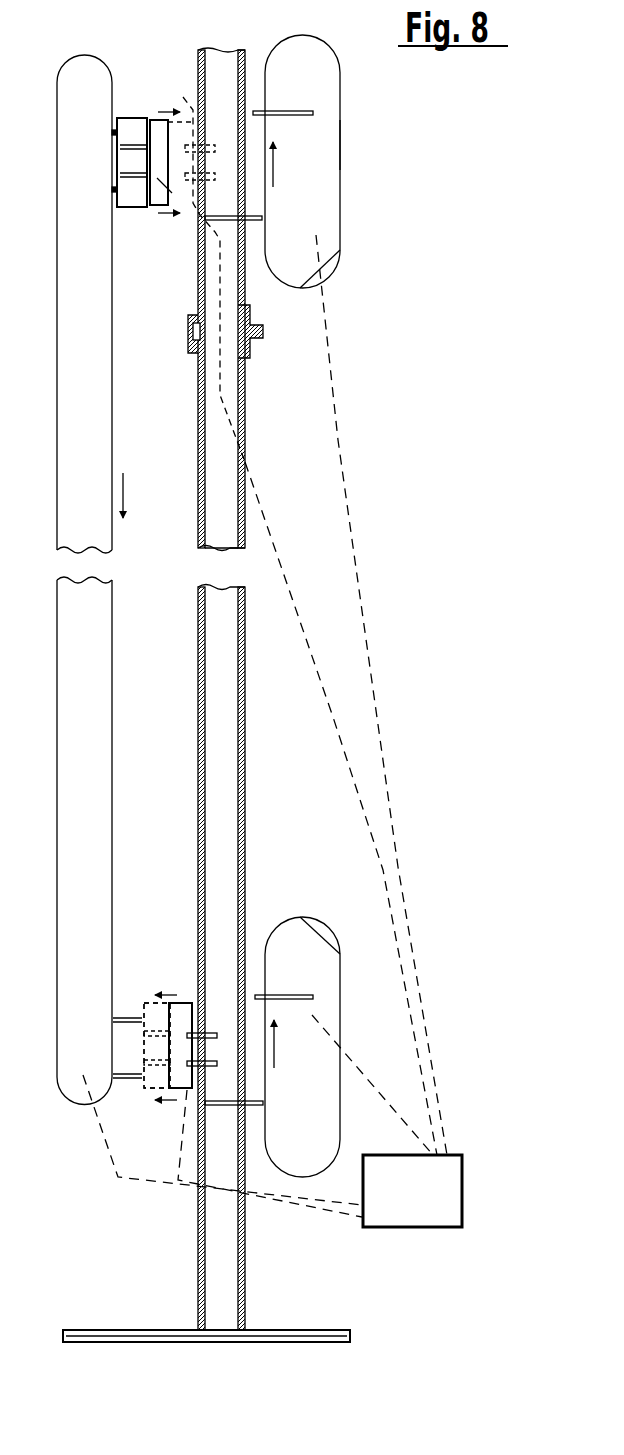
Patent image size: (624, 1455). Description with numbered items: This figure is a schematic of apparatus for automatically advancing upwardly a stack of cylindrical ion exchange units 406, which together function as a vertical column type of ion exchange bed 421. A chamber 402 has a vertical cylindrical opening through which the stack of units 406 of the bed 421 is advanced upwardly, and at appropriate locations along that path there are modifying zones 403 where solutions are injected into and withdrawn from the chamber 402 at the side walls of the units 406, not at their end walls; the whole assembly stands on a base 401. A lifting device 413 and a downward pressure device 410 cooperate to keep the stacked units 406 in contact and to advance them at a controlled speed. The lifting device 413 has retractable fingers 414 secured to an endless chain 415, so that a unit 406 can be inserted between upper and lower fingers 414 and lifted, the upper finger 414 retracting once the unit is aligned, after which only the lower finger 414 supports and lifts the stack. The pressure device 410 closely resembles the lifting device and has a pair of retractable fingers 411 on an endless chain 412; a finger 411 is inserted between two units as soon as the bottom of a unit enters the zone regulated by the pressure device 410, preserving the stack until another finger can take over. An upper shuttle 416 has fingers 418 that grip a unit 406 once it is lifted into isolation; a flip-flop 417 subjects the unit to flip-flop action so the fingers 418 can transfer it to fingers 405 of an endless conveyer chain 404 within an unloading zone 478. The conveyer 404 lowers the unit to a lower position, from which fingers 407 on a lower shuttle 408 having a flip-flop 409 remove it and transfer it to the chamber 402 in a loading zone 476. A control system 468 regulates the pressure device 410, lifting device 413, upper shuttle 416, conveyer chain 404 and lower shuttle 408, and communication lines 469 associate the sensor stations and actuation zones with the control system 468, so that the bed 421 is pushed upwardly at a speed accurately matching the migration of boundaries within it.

The base 401 is at (322, 1330).
The chamber 402 is at (245, 376).
The modifying zones 403 is at (263, 329).
The endless conveyer chain 404 is at (112, 80).
The fingers of endless conveyer chain 405 is at (115, 205).
The cylindrical ion exchange units 406 is at (125, 117).
The fingers on lower shuttle 407 is at (148, 1003).
The lower shuttle 408 is at (160, 986).
The flip-flop 409 is at (190, 1003).
The downward pressure device 410 is at (403, 272).
The retractable fingers 411 is at (254, 111).
The endless chain 412 is at (333, 62).
The lifting device 413 is at (300, 906).
The retractable fingers 414 is at (257, 995).
The endless chain 415 is at (334, 951).
The upper shuttle 416 is at (181, 240).
The flip-flop 417 is at (153, 212).
The fingers 418 is at (133, 147).
The ion exchange bed 421 is at (210, 548).
The control system 468 is at (462, 1190).
The communication lines 469 is at (417, 930).
The loading zone 476 is at (170, 1197).
The unloading zone 478 is at (417, 160).